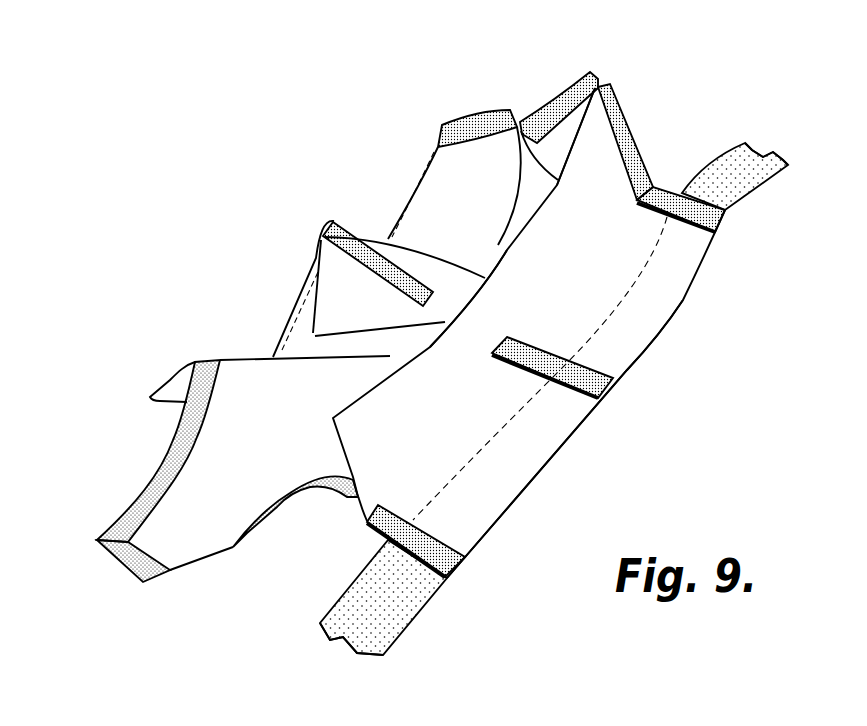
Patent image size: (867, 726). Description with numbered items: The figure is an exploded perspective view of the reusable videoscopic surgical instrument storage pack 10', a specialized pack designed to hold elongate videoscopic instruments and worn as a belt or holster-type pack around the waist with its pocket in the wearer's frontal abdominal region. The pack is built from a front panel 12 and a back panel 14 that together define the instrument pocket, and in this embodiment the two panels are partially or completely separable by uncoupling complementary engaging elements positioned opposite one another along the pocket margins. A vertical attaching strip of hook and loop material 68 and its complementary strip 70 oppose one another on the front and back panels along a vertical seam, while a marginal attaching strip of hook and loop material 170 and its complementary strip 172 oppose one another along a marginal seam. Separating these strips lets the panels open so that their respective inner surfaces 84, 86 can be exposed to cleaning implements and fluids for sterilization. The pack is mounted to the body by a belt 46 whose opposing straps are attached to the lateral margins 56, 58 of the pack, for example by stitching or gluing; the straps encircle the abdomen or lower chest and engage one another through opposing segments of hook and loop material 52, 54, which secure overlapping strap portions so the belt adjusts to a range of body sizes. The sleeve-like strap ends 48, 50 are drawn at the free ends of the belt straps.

The videoscopic instrument pack 10' is at (411, 335).
The front panel 12 is at (445, 158).
The back panel 14 is at (605, 172).
The belt 46 is at (668, 277).
The sleeve end 48 is at (382, 633).
The sleeve end 50 is at (763, 160).
The segment of hook and loop material 52 is at (398, 607).
The segment of hook and loop material 54 is at (737, 183).
The lateral margin 56 is at (450, 550).
The lateral margin 58 is at (723, 217).
The vertical attaching strip of hook and loop material 68 is at (339, 221).
The complementary vertical strip of hook and loop material 70 is at (590, 367).
The inner surface of pocket 84 is at (486, 220).
The inner surface of pocket 86 is at (603, 249).
The marginal attaching strip of hook and loop material 170 is at (553, 100).
The complementary marginal strip of hook and loop material 172 is at (617, 113).